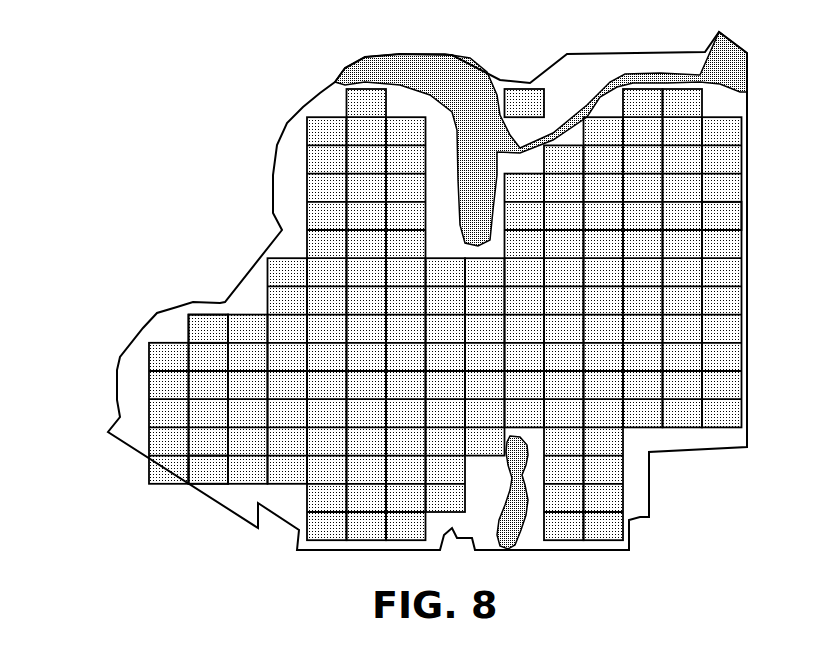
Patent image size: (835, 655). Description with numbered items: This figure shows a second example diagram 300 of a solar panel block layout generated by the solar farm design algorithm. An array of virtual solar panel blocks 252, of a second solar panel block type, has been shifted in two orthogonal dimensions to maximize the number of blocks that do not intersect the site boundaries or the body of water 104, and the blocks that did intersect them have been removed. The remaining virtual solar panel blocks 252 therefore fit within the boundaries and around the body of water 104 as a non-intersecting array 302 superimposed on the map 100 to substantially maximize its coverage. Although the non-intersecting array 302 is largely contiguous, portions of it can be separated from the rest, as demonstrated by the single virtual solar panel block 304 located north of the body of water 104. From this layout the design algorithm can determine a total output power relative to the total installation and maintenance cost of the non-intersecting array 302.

The second example diagram 300 is at (118, 70).
The map 100 is at (282, 132).
The body of water 104 is at (362, 62).
The virtual solar panel block 252 is at (718, 222).
The non-intersecting array 302 is at (333, 250).
The virtual solar panel block 304 is at (530, 98).